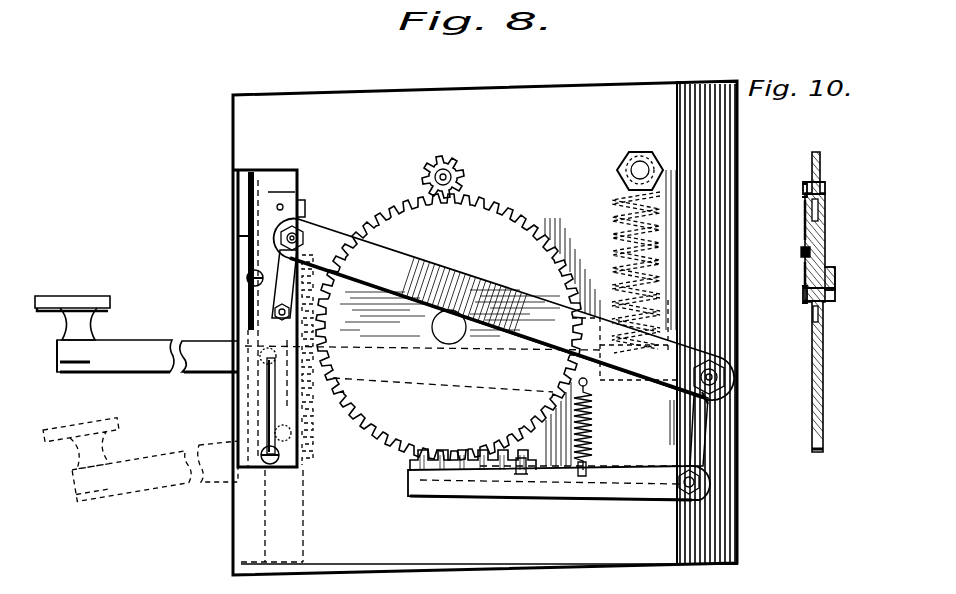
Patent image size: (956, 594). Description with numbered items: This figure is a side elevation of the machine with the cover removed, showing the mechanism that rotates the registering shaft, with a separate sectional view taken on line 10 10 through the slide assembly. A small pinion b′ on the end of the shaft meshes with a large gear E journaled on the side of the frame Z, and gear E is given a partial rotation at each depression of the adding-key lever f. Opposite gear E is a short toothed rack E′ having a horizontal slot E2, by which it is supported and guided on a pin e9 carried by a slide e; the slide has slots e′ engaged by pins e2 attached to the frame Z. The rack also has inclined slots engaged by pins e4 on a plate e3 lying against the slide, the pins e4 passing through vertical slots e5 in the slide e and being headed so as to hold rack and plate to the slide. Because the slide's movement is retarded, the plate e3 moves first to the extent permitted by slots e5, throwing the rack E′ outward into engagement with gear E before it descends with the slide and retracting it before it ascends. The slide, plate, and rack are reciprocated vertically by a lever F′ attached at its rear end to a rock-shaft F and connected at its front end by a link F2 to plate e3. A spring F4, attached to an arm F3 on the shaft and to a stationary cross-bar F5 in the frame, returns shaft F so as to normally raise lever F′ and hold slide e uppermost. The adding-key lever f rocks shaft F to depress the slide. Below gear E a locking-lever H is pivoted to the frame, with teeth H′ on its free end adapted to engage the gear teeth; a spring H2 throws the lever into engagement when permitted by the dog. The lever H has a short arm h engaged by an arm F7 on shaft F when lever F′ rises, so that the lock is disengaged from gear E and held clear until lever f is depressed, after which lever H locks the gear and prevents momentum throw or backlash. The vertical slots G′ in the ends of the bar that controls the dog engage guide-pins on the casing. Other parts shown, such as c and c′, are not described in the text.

In FIG. 8, the gear E is at (449, 327).
In FIG. 8, the toothed rack E′ is at (300, 212).
In FIG. 10, the toothed rack E′ is at (805, 216).
In FIG. 10, the horizontal slot E2 is at (805, 276).
In FIG. 8, the rock-shaft F is at (735, 378).
In FIG. 8, the lever F′ is at (398, 270).
In FIG. 8, the link F2 is at (430, 300).
In FIG. 10, the link F2 is at (832, 267).
In FIG. 8, the arm F3 is at (668, 335).
In FIG. 8, the spring F4 is at (615, 205).
In FIG. 8, the stationary cross-bar F5 is at (640, 170).
In FIG. 8, the arm F7 is at (710, 404).
In FIG. 8, the locking-lever H is at (575, 500).
In FIG. 8, the teeth H′ is at (408, 474).
In FIG. 8, the spring H2 is at (594, 425).
In FIG. 8, the vertical slots G′ is at (528, 460).
In FIG. 8, the short arm h is at (704, 438).
In FIG. 8, the pinion b′ is at (432, 170).
In FIG. 8, the slide bar c is at (238, 355).
In FIG. 8, the slide bar arm c′ is at (238, 236).
In FIG. 10, the slide e is at (823, 386).
In FIG. 8, the slots e′ is at (262, 422).
In FIG. 8, the pins e2 is at (258, 495).
In FIG. 8, the plate e3 is at (248, 212).
In FIG. 8, the pins e4 is at (318, 175).
In FIG. 10, the pins e4 is at (842, 292).
In FIG. 10, the vertical slots e5 is at (836, 322).
In FIG. 10, the pin e9 is at (801, 254).
In FIG. 8, the adding-key lever f is at (114, 400).
In FIG. 8, the frame Z is at (572, 141).
In FIG. 8, the section line 10 is at (285, 476).